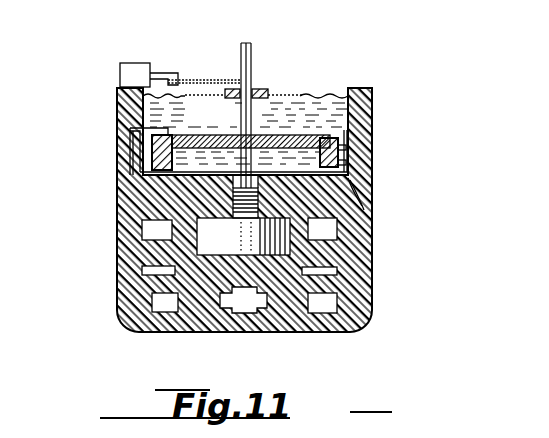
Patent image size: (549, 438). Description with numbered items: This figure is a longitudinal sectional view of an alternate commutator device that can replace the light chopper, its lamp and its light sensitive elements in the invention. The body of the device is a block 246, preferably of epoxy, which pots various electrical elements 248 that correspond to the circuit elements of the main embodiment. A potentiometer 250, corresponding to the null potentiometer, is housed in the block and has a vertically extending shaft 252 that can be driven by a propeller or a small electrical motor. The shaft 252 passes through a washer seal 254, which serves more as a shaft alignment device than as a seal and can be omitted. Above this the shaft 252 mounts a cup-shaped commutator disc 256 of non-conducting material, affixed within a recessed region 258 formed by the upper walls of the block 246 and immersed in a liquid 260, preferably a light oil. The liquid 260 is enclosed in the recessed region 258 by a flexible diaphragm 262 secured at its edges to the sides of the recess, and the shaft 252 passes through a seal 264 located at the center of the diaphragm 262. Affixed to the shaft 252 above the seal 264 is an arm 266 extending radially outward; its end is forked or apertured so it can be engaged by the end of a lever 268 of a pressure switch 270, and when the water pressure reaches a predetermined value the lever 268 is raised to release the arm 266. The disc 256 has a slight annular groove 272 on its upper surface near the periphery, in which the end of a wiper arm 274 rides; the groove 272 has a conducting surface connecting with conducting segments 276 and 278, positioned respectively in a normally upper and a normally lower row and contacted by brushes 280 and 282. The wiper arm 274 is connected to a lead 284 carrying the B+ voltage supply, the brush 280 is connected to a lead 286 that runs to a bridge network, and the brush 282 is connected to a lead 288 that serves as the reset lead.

The block 246 is at (365, 323).
The electrical elements 248 is at (337, 303).
The potentiometer 250 is at (197, 248).
The shaft 252 is at (251, 43).
The washer seal 254 is at (372, 222).
The commutator disc 256 is at (202, 133).
The recessed region 258 is at (370, 96).
The liquid 260 is at (293, 110).
The flexible diaphragm 262 is at (318, 97).
The seal 264 is at (257, 89).
The arm 266 is at (193, 77).
The lever 268 is at (162, 72).
The pressure switch 270 is at (120, 68).
The annular groove 272 is at (333, 138).
The wiper arm 274 is at (143, 123).
The conducting segments 276 is at (347, 145).
The conducting segments 278 is at (153, 158).
The brush 280 is at (346, 160).
The brush 282 is at (372, 181).
The lead 284 is at (128, 152).
The lead 286 is at (353, 203).
The lead 288 is at (353, 187).